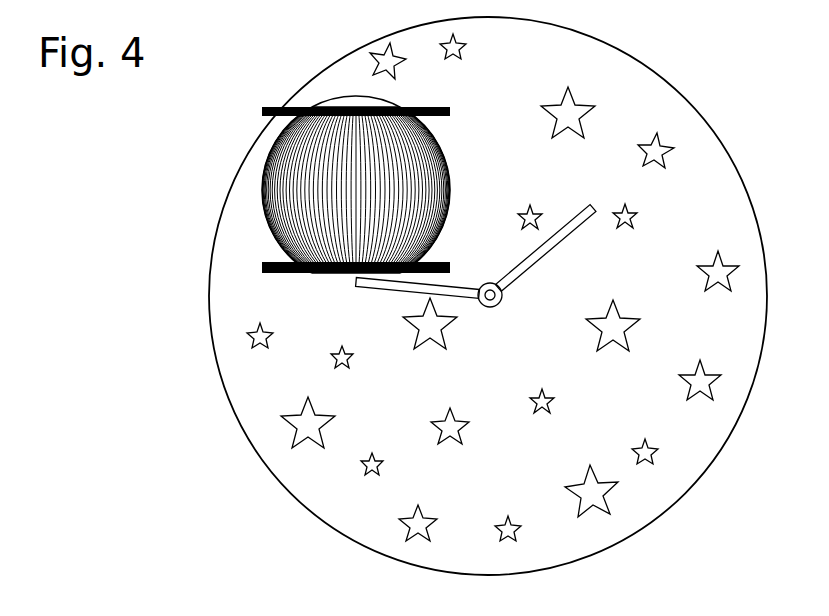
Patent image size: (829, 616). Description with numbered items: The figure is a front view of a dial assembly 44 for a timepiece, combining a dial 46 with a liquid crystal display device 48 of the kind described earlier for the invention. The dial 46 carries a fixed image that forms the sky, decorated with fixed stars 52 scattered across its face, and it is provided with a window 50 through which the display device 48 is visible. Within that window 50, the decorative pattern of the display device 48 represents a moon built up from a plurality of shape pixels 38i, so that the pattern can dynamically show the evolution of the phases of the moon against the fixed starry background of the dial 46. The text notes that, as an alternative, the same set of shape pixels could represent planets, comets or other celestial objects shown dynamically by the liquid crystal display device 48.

The shape pixels 38i is at (305, 188).
The dial assembly 44 is at (424, 296).
The dial 46 is at (250, 397).
The liquid crystal display device 48 is at (327, 286).
The window 50 is at (284, 208).
The fixed stars 52 is at (663, 146).